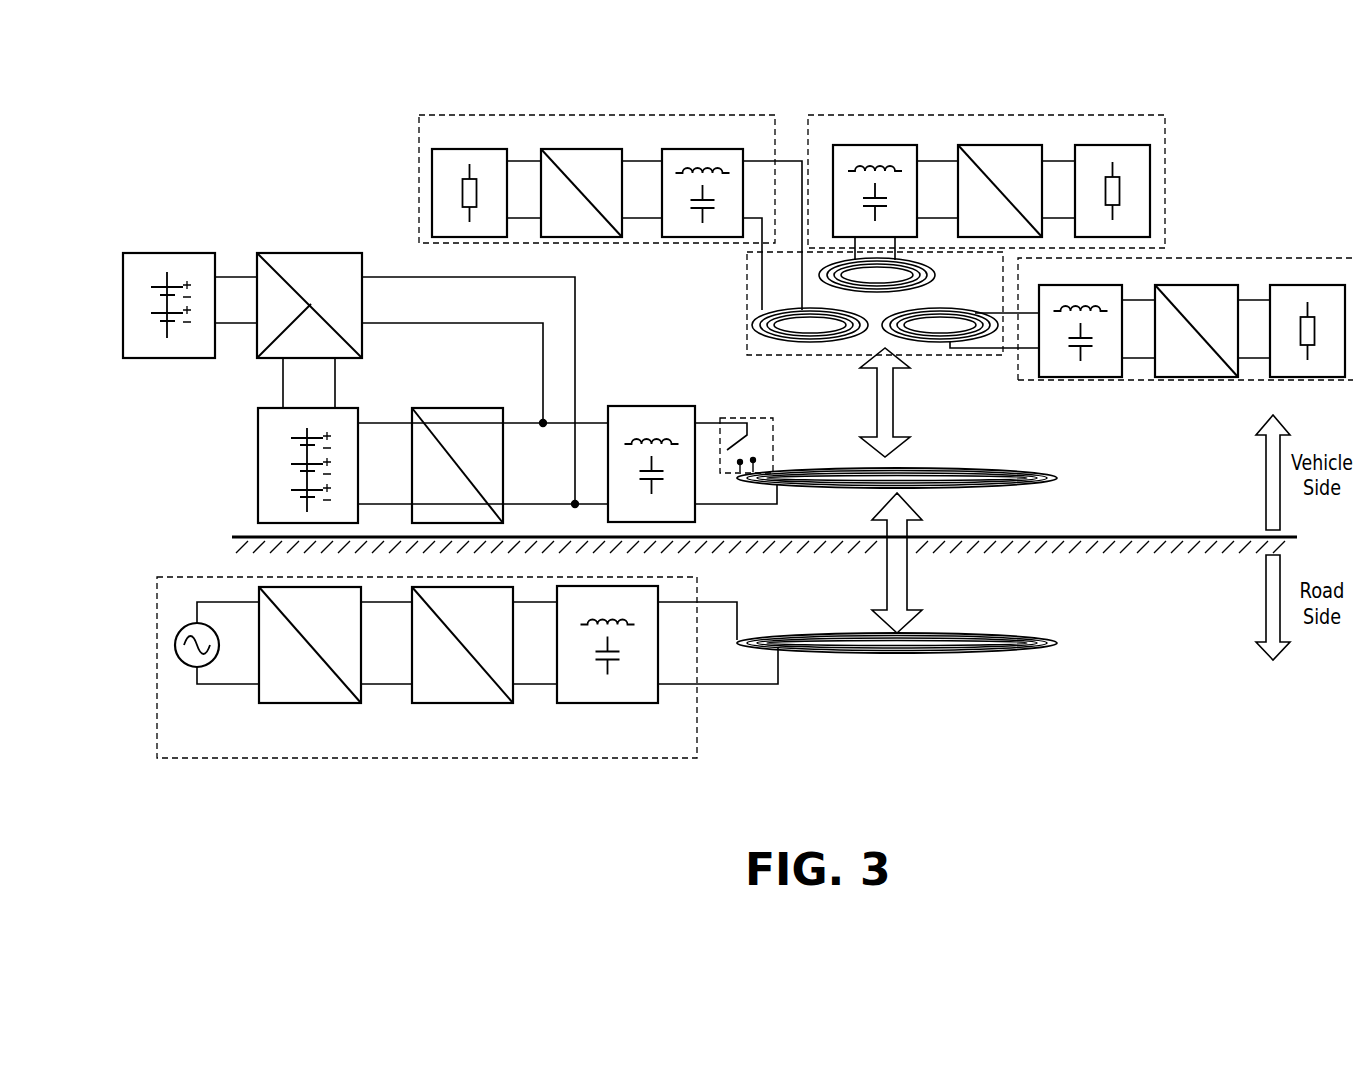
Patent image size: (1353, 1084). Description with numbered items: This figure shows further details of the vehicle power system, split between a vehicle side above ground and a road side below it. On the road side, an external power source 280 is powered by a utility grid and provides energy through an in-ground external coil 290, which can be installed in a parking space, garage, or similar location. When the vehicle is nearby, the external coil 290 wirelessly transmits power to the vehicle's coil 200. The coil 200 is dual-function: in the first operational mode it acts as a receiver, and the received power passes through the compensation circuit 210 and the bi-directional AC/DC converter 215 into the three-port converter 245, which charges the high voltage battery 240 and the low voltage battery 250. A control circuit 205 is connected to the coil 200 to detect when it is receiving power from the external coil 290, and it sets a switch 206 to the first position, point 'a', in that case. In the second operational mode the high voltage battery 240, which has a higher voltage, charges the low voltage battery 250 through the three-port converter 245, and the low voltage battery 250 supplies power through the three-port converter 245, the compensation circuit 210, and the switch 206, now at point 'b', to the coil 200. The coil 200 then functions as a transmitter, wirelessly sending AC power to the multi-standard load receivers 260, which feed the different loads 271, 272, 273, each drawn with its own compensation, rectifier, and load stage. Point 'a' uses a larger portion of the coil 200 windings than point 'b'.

The coil 200 is at (1023, 472).
The control circuit 205 is at (757, 417).
The switch 206 is at (770, 432).
The compensation circuit 210 is at (608, 406).
The AC/DC converter 215 is at (412, 415).
The high voltage battery 240 is at (258, 430).
The three-port converter 245 is at (362, 272).
The low voltage battery 250 is at (123, 268).
The multi-standard load receivers 260 is at (745, 340).
The load 271 is at (419, 142).
The load 272 is at (1165, 143).
The load 273 is at (1305, 258).
The external power source 280 is at (697, 705).
The external coil 290 is at (1040, 640).